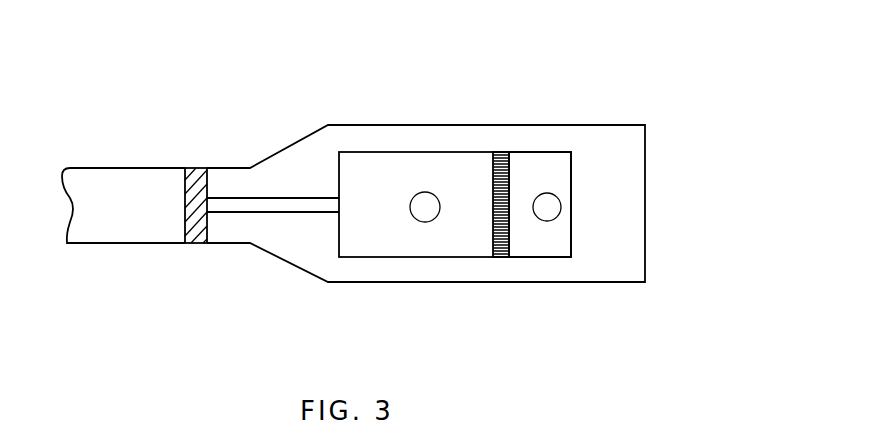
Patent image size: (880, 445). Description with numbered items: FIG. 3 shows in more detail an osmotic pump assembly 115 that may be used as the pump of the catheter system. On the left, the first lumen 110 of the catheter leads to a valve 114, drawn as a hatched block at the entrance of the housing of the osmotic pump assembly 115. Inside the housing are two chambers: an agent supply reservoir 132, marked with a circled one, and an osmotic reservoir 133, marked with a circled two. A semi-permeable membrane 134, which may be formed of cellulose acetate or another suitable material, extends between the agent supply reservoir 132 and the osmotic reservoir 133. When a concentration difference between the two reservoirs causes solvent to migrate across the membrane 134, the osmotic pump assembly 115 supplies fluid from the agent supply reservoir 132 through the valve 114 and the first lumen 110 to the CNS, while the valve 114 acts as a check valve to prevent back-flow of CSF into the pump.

The first lumen 110 is at (93, 244).
The valve 114 is at (193, 170).
The osmotic pump assembly 115 is at (393, 100).
The agent supply reservoir 132 is at (380, 250).
The osmotic reservoir 133 is at (542, 163).
The semi-permeable membrane 134 is at (500, 258).